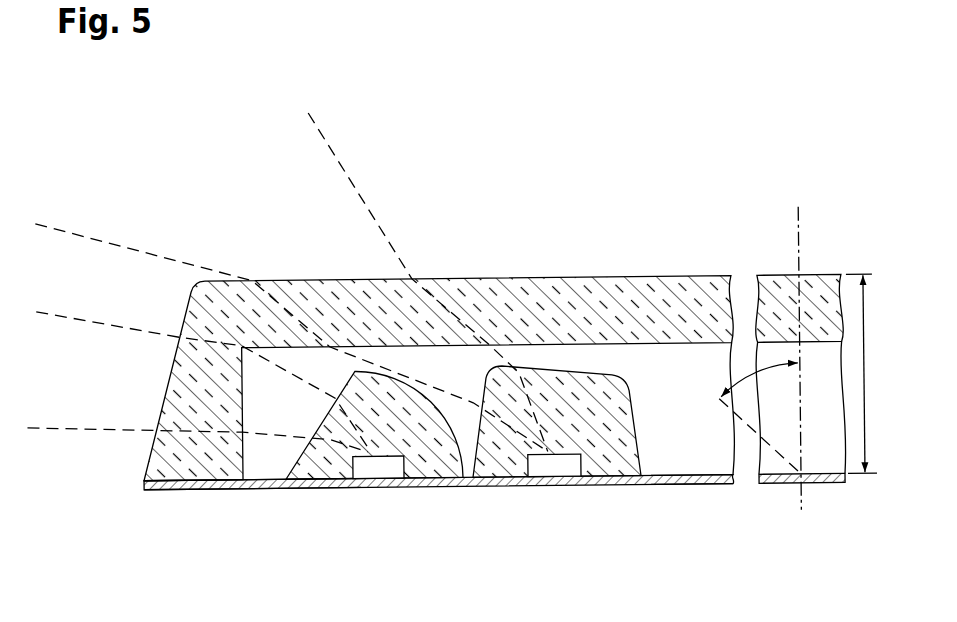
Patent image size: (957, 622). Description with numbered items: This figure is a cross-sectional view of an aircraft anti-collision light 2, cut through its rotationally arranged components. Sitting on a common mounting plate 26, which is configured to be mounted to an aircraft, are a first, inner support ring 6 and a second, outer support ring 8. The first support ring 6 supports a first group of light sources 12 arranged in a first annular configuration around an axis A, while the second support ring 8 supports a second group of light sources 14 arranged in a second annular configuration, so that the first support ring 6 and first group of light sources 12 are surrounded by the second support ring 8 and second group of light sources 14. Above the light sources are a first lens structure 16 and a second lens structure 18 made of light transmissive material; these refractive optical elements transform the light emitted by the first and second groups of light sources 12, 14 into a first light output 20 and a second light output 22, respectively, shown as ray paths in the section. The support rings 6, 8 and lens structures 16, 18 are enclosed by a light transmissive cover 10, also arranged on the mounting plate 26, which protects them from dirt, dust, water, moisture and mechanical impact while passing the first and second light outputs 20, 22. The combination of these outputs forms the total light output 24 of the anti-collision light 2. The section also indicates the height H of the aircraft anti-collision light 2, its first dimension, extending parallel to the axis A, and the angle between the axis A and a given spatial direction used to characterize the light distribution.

The aircraft anti-collision light 2 is at (797, 185).
The first support ring 6 is at (507, 490).
The second support ring 8 is at (305, 495).
The light transmissive cover 10 is at (541, 278).
The first group of light sources 12 is at (580, 463).
The second group of light sources 14 is at (403, 463).
The first lens structure 16 is at (620, 378).
The second lens structure 18 is at (347, 382).
The first light output 20 is at (401, 240).
The second light output 22 is at (80, 446).
The total light output 24 is at (415, 230).
The common mounting plate 26 is at (702, 486).
The axis A is at (800, 242).
The height H is at (870, 373).